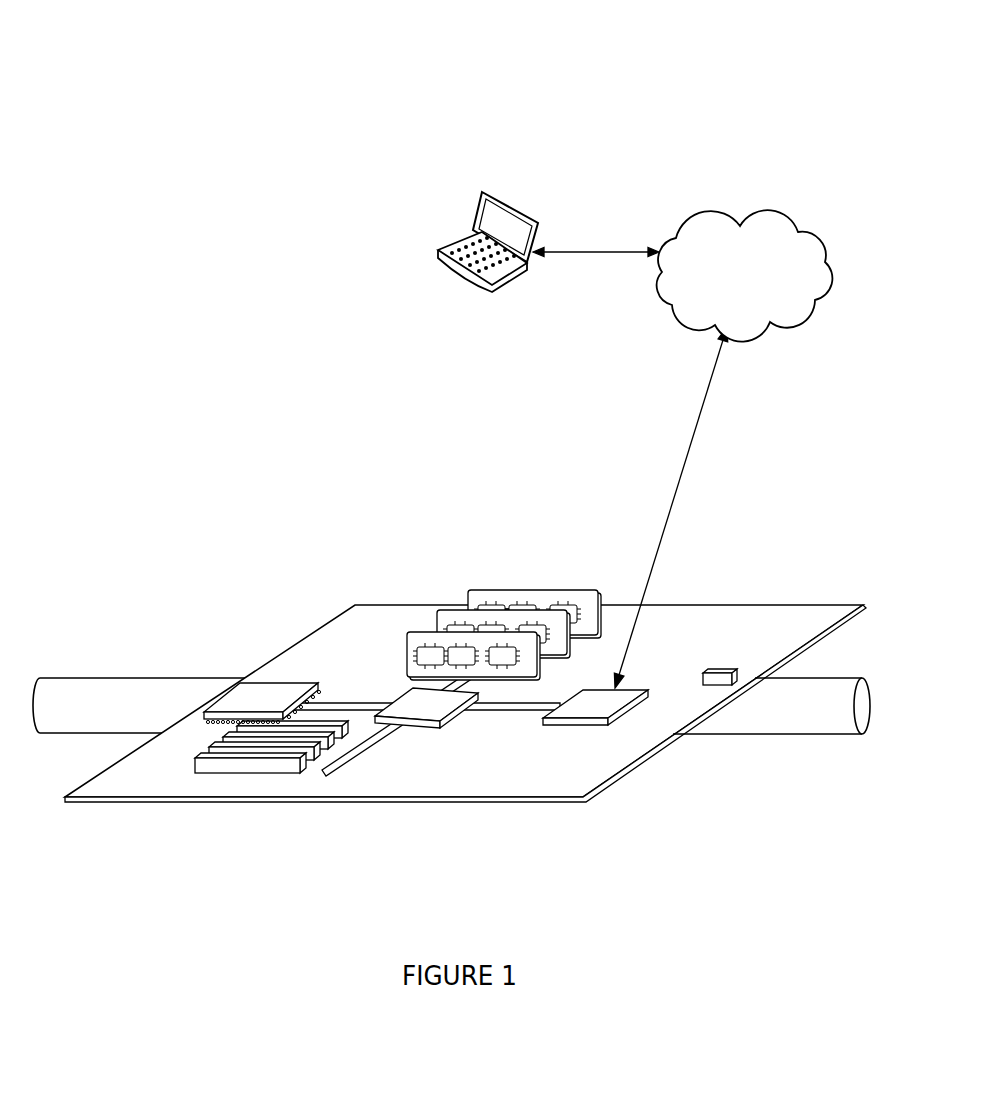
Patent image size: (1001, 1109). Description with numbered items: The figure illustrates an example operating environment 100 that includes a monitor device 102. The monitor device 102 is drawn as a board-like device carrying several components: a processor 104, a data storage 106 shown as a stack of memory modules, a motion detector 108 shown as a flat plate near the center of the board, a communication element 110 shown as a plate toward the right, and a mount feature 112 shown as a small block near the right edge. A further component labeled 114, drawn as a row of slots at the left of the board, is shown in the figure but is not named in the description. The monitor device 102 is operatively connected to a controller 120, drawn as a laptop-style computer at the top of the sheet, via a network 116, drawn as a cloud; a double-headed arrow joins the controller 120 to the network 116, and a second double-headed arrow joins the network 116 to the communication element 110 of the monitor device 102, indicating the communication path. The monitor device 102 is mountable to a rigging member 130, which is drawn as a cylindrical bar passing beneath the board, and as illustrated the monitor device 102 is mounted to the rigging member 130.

The operating environment 100 is at (84, 44).
The monitor device 102 is at (383, 605).
The processor 104 is at (273, 684).
The data storage 106 is at (533, 590).
The motion detector 108 is at (420, 729).
The communication element 110 is at (630, 712).
The mount feature 112 is at (720, 668).
The expansion slots 114 is at (195, 767).
The network 116 is at (745, 276).
The controller 120 is at (537, 216).
The rigging member 130 is at (836, 735).